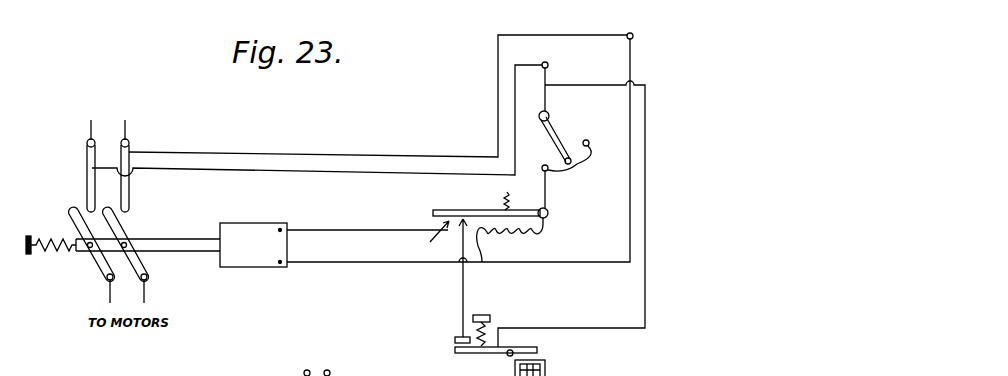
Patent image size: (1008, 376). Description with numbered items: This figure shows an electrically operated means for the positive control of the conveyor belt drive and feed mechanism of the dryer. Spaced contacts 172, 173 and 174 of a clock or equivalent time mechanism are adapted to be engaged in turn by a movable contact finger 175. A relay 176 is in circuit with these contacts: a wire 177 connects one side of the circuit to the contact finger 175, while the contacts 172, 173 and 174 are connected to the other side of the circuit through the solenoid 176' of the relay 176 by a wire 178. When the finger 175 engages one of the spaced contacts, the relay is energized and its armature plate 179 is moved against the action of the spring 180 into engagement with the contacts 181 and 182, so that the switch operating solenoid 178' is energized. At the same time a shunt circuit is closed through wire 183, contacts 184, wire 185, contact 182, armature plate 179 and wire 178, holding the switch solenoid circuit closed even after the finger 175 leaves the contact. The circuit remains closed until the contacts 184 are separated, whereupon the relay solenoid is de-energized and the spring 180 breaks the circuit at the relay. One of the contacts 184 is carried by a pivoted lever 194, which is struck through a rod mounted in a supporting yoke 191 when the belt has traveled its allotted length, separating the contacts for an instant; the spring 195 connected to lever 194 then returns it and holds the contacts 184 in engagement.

The spaced contact 172 is at (550, 173).
The spaced contact 173 is at (580, 164).
The spaced contact 174 is at (590, 143).
The movable contact finger 175 is at (565, 138).
The relay 176 is at (512, 211).
The solenoid of the relay 176' is at (278, 245).
The wire 177 is at (459, 176).
The wire 178 is at (483, 193).
The switch operating solenoid 178' is at (274, 283).
The armature plate 179 is at (433, 211).
The spring 180 is at (530, 189).
The contact 181 is at (368, 239).
The contact 182 is at (481, 247).
The wire 183 is at (646, 280).
The contacts 184 is at (455, 352).
The wire 185 is at (466, 292).
The supporting yoke 191 is at (547, 373).
The pivoted lever 194 is at (538, 352).
The spring 195 is at (492, 330).